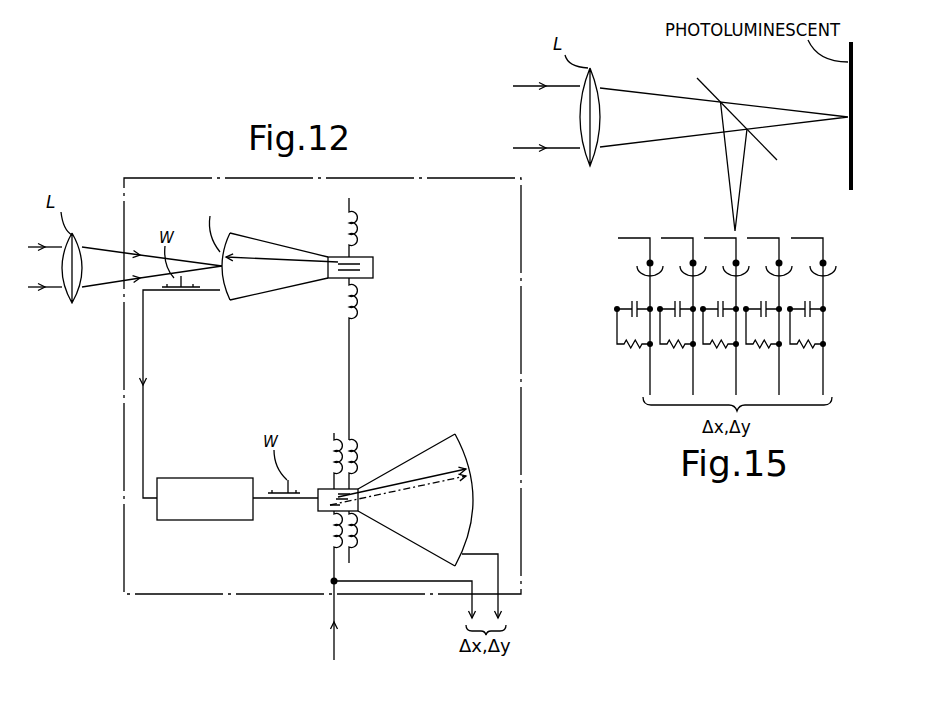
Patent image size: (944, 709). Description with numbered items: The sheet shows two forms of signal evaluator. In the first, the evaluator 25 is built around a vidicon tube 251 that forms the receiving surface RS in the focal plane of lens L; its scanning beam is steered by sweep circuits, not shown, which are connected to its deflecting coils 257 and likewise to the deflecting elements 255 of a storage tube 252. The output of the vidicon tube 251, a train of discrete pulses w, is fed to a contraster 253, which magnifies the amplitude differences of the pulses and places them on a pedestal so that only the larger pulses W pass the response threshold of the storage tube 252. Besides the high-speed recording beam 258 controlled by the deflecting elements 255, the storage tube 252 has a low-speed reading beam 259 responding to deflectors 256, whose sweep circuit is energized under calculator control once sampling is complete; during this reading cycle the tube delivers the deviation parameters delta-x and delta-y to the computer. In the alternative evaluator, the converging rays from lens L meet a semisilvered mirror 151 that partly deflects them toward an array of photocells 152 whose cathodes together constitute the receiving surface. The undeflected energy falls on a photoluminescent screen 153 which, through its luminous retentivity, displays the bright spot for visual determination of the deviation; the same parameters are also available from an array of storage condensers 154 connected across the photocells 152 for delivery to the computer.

In FIG. 12, the evaluator 25 is at (124, 426).
In FIG. 12, the vidicon tube 251 is at (373, 266).
In FIG. 12, the storage tube 252 is at (456, 432).
In FIG. 12, the contraster 253 is at (198, 478).
In FIG. 12, the deflecting elements 255 is at (351, 562).
In FIG. 12, the deflectors 256 is at (333, 534).
In FIG. 12, the deflecting coils 257 is at (357, 217).
In FIG. 12, the high-speed recording beam 258 is at (410, 482).
In FIG. 12, the low-speed reading beam 259 is at (416, 486).
In FIG. 15, the semisilvered mirror 151 is at (708, 88).
In FIG. 15, the photocells 152 is at (783, 262).
In FIG. 15, the photoluminescent screen 153 is at (855, 155).
In FIG. 15, the storage condensers 154 is at (763, 313).